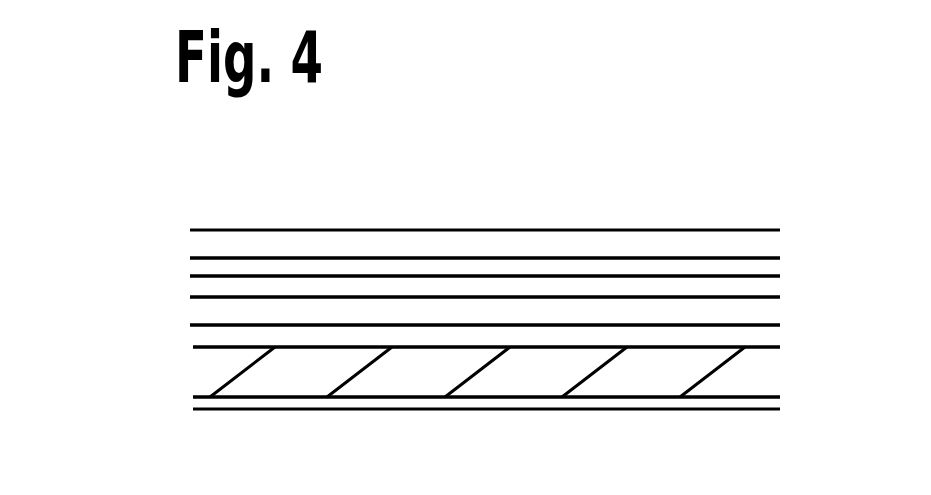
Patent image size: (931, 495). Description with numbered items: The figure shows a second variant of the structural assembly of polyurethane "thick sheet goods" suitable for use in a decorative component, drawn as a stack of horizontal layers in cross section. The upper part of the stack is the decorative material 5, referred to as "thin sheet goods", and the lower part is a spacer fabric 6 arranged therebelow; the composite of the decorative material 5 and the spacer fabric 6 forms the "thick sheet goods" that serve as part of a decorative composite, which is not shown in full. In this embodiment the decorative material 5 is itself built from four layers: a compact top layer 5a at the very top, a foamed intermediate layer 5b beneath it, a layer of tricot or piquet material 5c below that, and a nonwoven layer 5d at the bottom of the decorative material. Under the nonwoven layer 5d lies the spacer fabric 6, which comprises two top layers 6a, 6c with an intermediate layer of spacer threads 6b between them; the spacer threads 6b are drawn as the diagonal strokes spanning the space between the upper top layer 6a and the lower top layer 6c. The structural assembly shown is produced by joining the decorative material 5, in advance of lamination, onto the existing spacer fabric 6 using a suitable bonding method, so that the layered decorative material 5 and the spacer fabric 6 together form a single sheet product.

The decorative material 5 is at (439, 272).
The compact top layer 5a is at (210, 246).
The foamed intermediate layer 5b is at (203, 268).
The layer of tricot or piquet material 5c is at (210, 287).
The nonwoven layer 5d is at (218, 315).
The spacer fabric 6 is at (440, 401).
The top layer 6a is at (213, 337).
The intermediate layer of spacer threads 6b is at (227, 373).
The top layer 6c is at (197, 408).